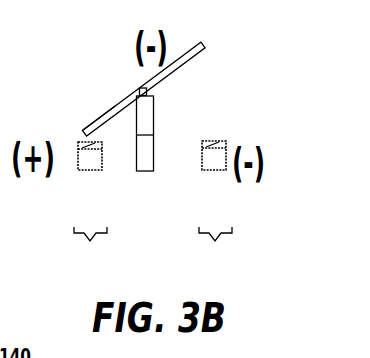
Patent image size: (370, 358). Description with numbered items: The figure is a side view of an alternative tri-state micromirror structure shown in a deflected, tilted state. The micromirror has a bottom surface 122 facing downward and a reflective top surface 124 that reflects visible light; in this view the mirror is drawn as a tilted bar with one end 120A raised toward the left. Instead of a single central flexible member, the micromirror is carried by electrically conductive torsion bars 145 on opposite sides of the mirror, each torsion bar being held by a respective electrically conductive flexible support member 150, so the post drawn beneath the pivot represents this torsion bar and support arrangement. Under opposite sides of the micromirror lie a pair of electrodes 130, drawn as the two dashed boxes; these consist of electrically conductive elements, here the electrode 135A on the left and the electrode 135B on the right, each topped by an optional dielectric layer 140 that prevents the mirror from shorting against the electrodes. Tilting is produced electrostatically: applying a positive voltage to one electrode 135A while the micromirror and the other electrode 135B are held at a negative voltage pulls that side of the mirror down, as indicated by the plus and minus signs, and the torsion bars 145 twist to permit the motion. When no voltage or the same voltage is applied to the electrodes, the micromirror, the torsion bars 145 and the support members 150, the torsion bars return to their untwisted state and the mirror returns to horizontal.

The bottom surface 122 is at (190, 62).
The reflective top surface 124 is at (138, 89).
The lever end 120A is at (110, 113).
The torsion bar 145 is at (150, 97).
The support member 150 is at (147, 135).
The dielectric layer 140 is at (96, 158).
The electrode 135A is at (69, 181).
The electrode 135B is at (204, 142).
The electrodes 130 is at (151, 248).